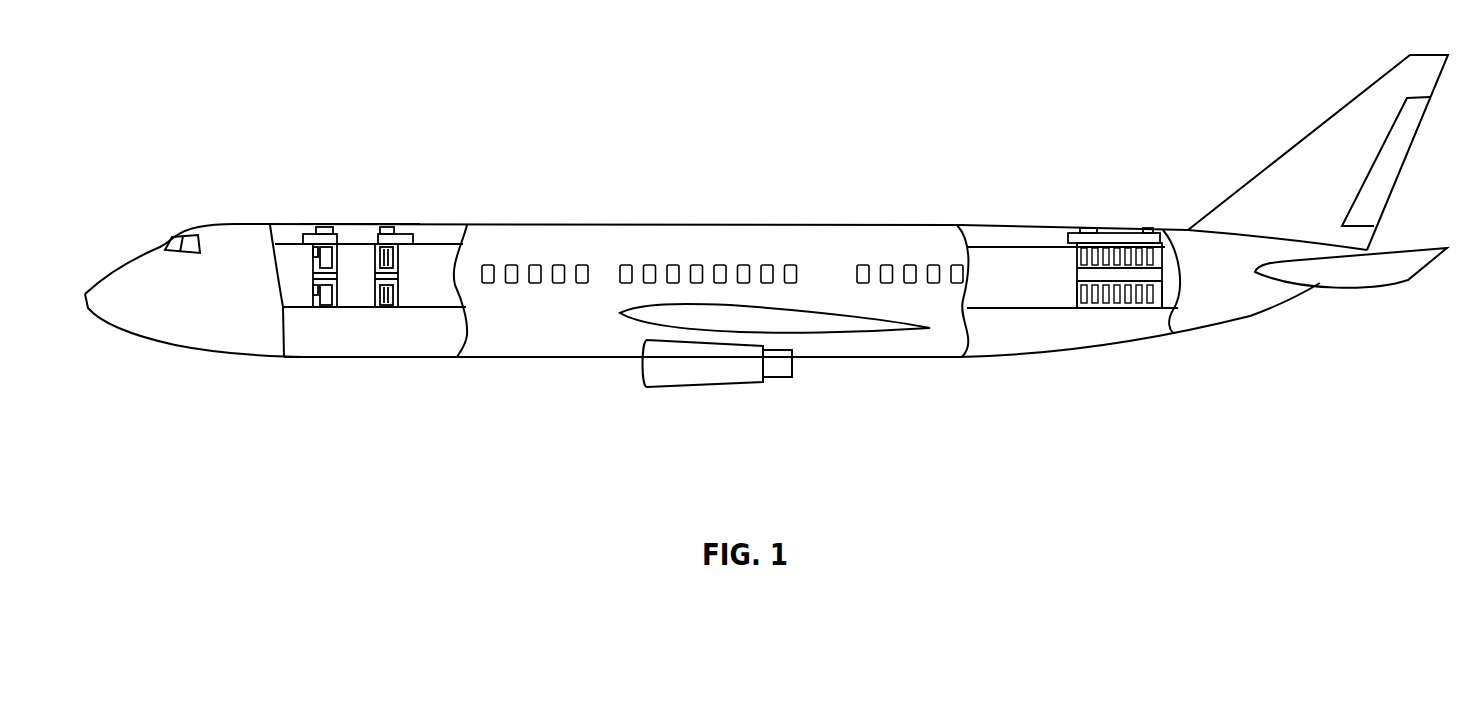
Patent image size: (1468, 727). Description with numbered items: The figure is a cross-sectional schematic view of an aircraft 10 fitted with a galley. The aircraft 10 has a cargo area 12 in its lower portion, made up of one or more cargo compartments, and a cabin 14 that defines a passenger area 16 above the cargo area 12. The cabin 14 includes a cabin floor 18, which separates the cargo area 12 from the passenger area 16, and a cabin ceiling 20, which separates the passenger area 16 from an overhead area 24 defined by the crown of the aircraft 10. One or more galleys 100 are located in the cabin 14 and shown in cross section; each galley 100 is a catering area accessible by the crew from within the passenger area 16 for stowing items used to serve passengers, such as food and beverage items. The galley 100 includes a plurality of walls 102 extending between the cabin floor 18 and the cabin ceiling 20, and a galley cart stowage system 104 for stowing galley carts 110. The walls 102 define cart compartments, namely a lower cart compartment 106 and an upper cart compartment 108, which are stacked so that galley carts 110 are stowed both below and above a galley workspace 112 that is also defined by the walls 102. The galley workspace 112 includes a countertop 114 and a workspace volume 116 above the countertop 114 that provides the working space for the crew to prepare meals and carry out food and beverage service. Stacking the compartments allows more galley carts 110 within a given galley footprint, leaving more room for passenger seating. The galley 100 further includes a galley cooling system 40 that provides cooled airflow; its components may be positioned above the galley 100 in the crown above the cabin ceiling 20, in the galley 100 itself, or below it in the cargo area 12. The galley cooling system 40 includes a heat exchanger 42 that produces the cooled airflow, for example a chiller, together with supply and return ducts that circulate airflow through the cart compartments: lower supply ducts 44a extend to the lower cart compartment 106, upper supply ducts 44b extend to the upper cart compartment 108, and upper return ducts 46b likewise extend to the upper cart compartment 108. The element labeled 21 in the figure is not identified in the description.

The aircraft 10 is at (857, 125).
The cargo area 12 is at (355, 338).
The cabin 14 is at (297, 266).
The passenger area 16 is at (430, 250).
The cabin floor 18 is at (434, 296).
The cabin ceiling 20 is at (442, 272).
The air passage 21 is at (365, 277).
The overhead area 24 is at (363, 227).
The galley cooling system 40 is at (387, 227).
The heat exchanger 42 is at (224, 264).
The lower supply ducts 44a is at (313, 295).
The upper supply ducts 44b is at (310, 290).
The upper return ducts 46b is at (313, 249).
The galley 100 is at (1107, 284).
The walls 102 is at (1163, 292).
The galley cart stowage system 104 is at (1127, 312).
The lower cart compartment 106 is at (1075, 289).
The upper cart compartment 108 is at (1107, 252).
The galley carts 110 is at (1132, 252).
The galley workspace 112 is at (1088, 276).
The countertop 114 is at (1113, 282).
The workspace volume 116 is at (1143, 276).